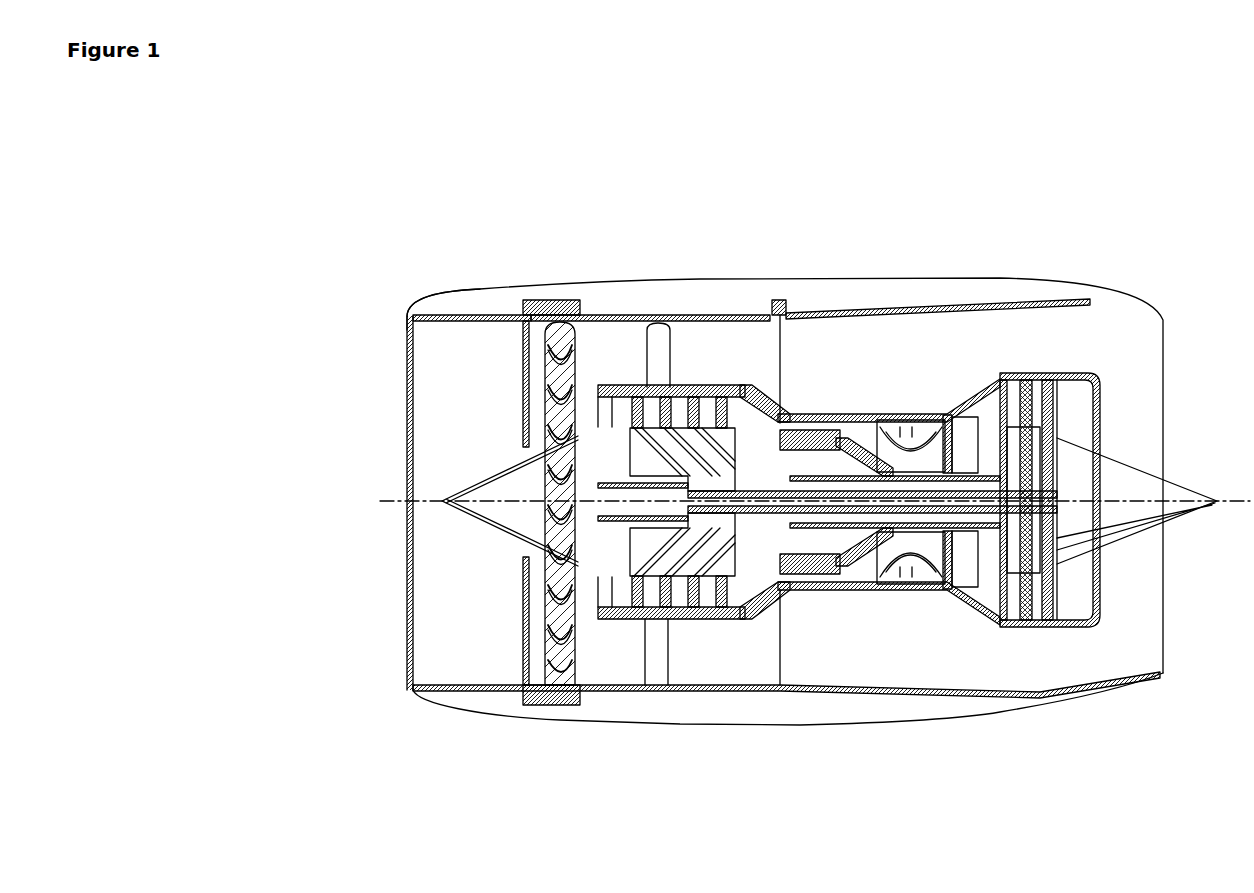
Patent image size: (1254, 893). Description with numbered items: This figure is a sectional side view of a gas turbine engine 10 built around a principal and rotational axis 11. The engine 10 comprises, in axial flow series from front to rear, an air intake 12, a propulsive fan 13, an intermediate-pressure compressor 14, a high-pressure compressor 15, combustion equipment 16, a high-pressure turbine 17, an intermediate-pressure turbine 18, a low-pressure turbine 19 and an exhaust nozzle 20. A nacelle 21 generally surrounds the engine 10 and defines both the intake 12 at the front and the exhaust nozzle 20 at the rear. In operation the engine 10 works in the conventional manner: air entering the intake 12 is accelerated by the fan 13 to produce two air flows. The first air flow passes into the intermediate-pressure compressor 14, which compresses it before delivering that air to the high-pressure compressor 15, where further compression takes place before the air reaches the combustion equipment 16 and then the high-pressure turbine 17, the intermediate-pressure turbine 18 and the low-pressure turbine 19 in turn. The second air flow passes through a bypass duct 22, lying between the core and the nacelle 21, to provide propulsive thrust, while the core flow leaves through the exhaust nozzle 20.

The gas turbine engine 10 is at (391, 362).
The principal and rotational axis 11 is at (406, 501).
The air intake 12 is at (479, 321).
The propulsive fan 13 is at (547, 650).
The intermediate-pressure compressor 14 is at (703, 622).
The high-pressure compressor 15 is at (808, 432).
The combustion equipment 16 is at (887, 585).
The high-pressure turbine 17 is at (940, 588).
The intermediate-pressure turbine 18 is at (981, 404).
The low-pressure turbine 19 is at (1000, 599).
The exhaust nozzle 20 is at (1163, 673).
The nacelle 21 is at (940, 279).
The bypass duct 22 is at (753, 367).